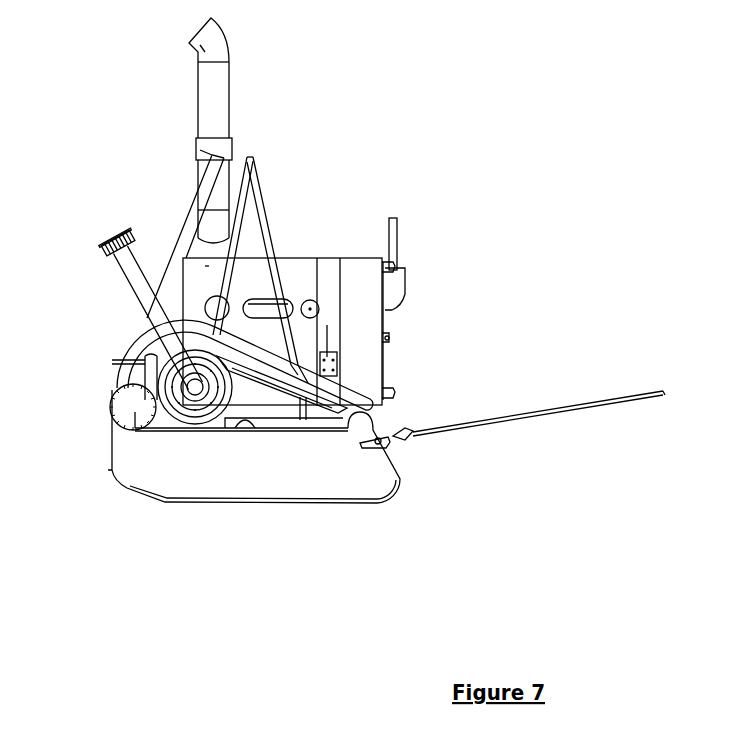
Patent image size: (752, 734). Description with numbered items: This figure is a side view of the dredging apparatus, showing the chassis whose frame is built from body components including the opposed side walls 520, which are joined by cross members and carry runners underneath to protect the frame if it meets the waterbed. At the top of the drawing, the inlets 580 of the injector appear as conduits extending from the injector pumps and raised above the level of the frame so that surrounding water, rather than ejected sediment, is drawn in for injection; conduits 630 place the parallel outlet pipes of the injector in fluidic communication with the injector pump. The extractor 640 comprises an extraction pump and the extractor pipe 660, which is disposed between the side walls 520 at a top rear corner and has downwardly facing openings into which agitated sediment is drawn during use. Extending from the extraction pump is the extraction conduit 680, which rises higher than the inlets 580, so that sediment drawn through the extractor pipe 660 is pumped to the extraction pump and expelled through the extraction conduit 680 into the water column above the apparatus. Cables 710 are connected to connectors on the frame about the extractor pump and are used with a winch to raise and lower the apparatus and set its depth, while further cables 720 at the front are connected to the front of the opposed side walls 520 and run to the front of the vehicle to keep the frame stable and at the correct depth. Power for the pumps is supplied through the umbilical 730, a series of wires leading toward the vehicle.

The extraction conduit 680 is at (225, 95).
The cables 710 is at (242, 222).
The extractor 640 is at (325, 235).
The umbilical 730 is at (400, 282).
The inlets 580 is at (133, 278).
The extractor pipe 660 is at (133, 412).
The conduits 630 is at (272, 378).
The side walls 520 is at (305, 542).
The cables 720 is at (547, 402).